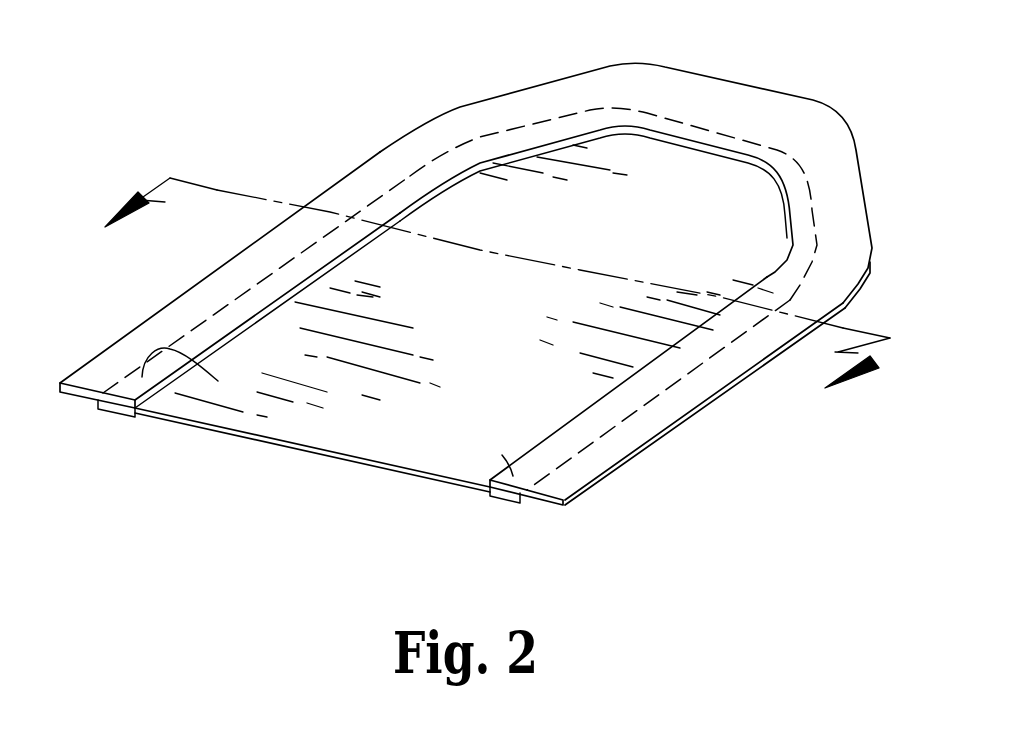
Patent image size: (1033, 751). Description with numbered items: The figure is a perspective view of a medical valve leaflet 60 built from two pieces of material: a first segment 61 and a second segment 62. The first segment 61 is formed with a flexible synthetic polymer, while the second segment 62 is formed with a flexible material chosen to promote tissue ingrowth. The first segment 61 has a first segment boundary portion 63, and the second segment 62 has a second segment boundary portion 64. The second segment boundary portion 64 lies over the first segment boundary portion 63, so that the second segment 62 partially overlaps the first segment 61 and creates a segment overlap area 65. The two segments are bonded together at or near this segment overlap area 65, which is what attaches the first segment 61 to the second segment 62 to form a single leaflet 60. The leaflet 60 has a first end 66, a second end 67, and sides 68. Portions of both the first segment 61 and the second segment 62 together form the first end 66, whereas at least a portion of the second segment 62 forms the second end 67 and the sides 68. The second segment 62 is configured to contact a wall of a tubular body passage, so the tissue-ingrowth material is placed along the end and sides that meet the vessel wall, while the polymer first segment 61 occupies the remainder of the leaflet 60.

The medical valve leaflet 60 is at (257, 108).
The first segment 61 is at (362, 322).
The second segment 62 is at (706, 380).
The first segment boundary portion 63 is at (117, 410).
The second segment boundary portion 64 is at (197, 379).
The segment overlap area 65 is at (589, 425).
The first end 66 is at (318, 455).
The second end 67 is at (750, 88).
The sides 68 is at (233, 257).